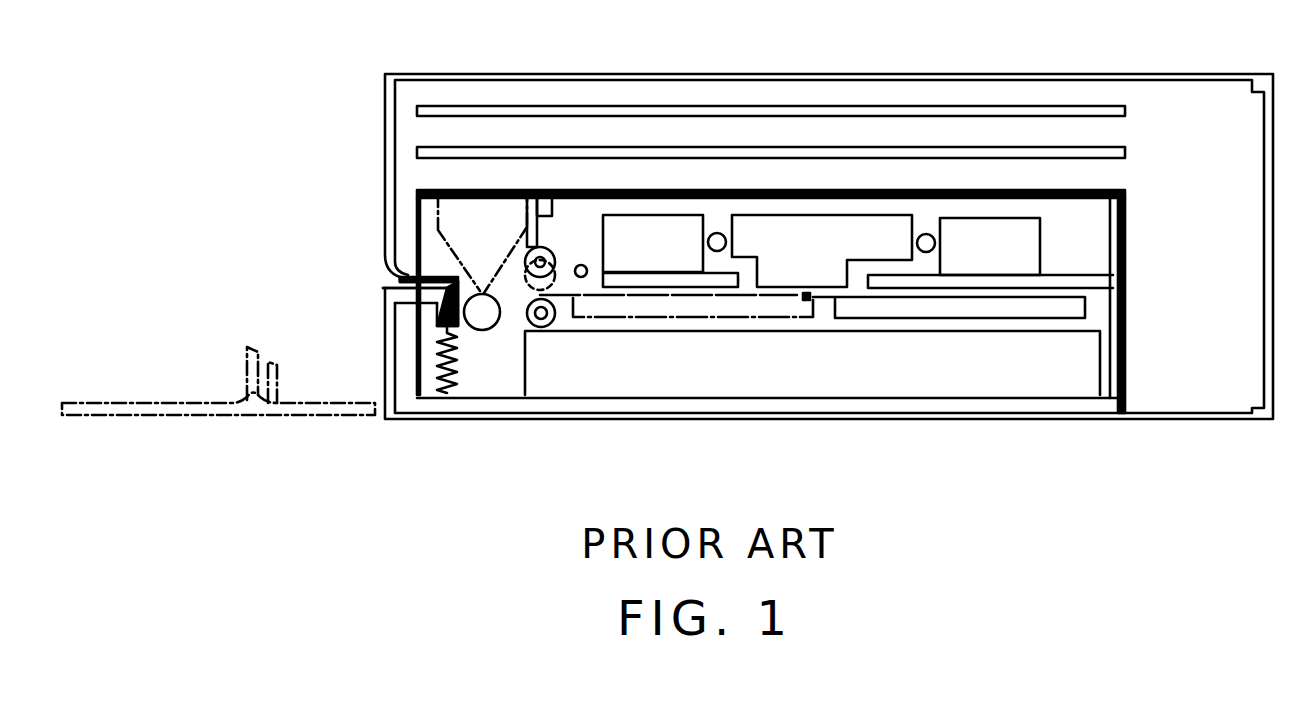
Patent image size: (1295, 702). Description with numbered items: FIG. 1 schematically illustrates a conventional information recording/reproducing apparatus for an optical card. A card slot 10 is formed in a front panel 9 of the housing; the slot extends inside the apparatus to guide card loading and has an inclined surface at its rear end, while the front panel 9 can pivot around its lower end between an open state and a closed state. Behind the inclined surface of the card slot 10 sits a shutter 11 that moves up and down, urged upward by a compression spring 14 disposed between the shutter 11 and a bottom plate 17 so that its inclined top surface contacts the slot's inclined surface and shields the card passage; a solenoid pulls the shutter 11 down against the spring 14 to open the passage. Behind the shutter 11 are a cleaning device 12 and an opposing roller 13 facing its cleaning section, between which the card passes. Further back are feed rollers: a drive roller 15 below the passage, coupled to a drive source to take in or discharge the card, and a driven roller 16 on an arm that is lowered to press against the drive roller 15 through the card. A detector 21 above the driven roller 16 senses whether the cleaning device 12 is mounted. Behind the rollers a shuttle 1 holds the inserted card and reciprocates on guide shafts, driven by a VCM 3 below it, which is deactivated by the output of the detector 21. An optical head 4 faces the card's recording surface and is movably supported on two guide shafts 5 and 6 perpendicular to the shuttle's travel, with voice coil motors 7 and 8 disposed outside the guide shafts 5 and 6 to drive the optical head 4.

The shuttle 1 is at (652, 312).
The VCM 3 is at (823, 385).
The optical head 4 is at (838, 214).
The guide shaft 5 is at (718, 232).
The guide shaft 6 is at (925, 233).
The voice coil motor 7 is at (686, 214).
The voice coil motor 8 is at (1007, 217).
The front panel 9 is at (387, 232).
The card slot 10 is at (397, 283).
The shutter 11 is at (437, 317).
The cleaning device 12 is at (441, 213).
The opposing roller 13 is at (483, 330).
The compression spring 14 is at (457, 373).
The drive roller 15 is at (567, 328).
The driven roller 16 is at (550, 258).
The bottom plate 17 is at (915, 408).
The detector 21 is at (542, 194).